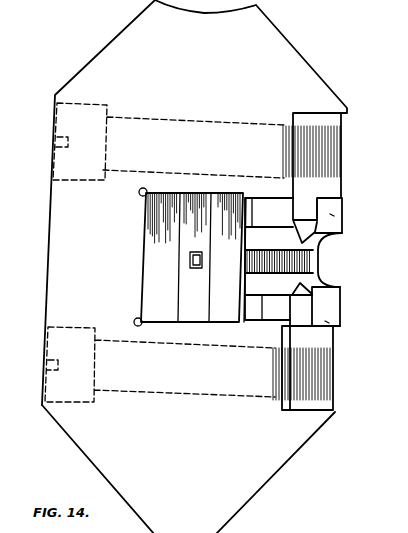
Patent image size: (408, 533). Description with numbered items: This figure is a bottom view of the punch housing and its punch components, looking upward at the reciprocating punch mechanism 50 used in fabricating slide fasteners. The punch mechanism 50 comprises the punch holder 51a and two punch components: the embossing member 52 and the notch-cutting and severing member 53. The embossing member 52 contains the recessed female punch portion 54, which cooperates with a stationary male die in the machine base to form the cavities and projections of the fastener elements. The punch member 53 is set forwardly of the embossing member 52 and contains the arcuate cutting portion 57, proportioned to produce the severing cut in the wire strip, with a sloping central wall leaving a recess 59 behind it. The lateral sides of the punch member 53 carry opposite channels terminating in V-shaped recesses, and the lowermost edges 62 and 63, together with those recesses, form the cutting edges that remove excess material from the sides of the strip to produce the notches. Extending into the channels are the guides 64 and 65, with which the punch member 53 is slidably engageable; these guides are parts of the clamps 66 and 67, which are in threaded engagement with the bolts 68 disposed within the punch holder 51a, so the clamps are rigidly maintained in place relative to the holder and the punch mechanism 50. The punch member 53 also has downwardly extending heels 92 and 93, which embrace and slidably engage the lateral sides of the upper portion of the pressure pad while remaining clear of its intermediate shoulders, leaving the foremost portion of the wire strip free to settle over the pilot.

The punch mechanism 50 is at (90, 54).
The punch holder 51a is at (66, 437).
The embossing member 52 is at (143, 247).
The notch-cutting and severing member 53 is at (344, 224).
The recessed female punch portion 54 is at (189, 262).
The arcuate cutting portion 57 is at (338, 252).
The recess 59 is at (271, 262).
The lowermost edge 62 is at (294, 296).
The lowermost edge 63 is at (292, 222).
The guide 64 is at (330, 300).
The guide 65 is at (311, 216).
The clamp 66 is at (326, 343).
The clamp 67 is at (338, 118).
The bolt 68 is at (258, 122).
The heel 92 is at (332, 213).
The heel 93 is at (252, 207).